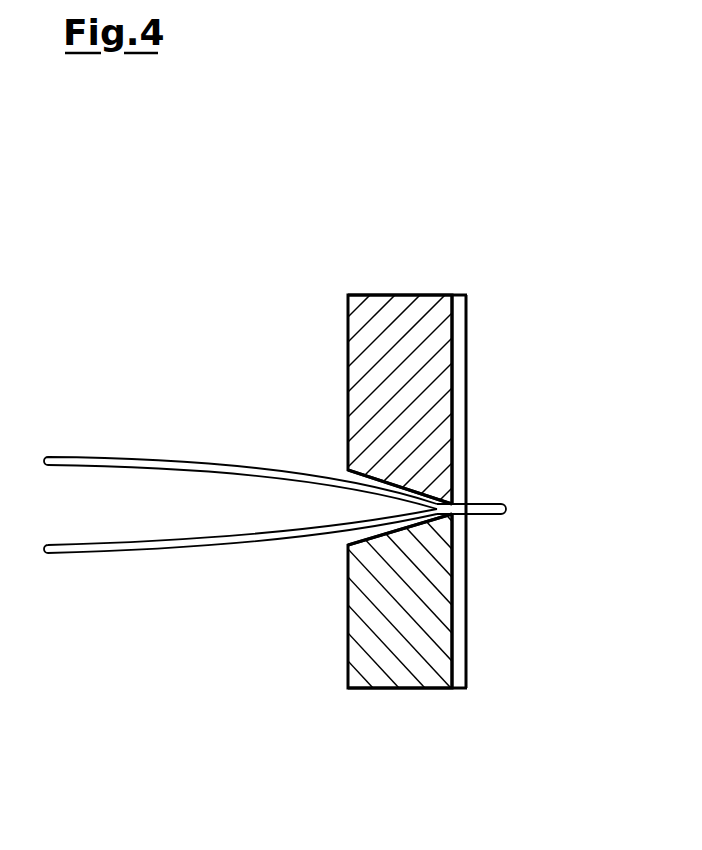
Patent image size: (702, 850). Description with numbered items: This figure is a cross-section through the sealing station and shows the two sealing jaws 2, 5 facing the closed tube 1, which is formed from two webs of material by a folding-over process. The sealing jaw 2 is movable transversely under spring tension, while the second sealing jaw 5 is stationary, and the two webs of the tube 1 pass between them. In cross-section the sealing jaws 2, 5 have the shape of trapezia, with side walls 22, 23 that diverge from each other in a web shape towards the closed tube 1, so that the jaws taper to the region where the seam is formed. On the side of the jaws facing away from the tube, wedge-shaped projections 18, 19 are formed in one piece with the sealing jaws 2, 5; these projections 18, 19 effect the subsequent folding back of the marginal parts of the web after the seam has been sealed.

The tube 1 is at (133, 553).
The sealing jaw 2 is at (415, 310).
The second sealing jaw 5 is at (411, 656).
The wedge-shaped projection 18 is at (523, 399).
The wedge-shaped projection 19 is at (523, 601).
The side wall 22 is at (346, 434).
The side wall 23 is at (355, 582).